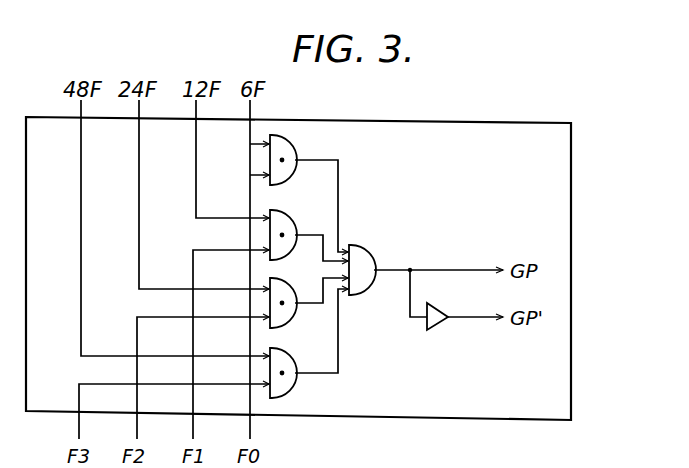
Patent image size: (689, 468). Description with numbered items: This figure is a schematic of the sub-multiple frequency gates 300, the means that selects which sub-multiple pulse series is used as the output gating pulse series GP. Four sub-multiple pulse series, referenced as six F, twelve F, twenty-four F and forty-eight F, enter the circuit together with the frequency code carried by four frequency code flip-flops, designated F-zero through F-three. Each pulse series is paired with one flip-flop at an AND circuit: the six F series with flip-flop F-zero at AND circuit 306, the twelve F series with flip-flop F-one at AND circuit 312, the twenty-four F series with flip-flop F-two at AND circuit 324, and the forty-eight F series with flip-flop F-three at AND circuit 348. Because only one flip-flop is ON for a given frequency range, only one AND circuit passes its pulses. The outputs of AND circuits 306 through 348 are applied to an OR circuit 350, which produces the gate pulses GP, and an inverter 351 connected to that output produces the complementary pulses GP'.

The sub-multiple frequency gates 300 is at (443, 122).
The AND circuit 306 is at (293, 146).
The AND circuit 312 is at (304, 210).
The AND circuit 324 is at (292, 315).
The AND circuit 348 is at (291, 384).
The OR circuit 350 is at (357, 244).
The inverter 351 is at (437, 325).